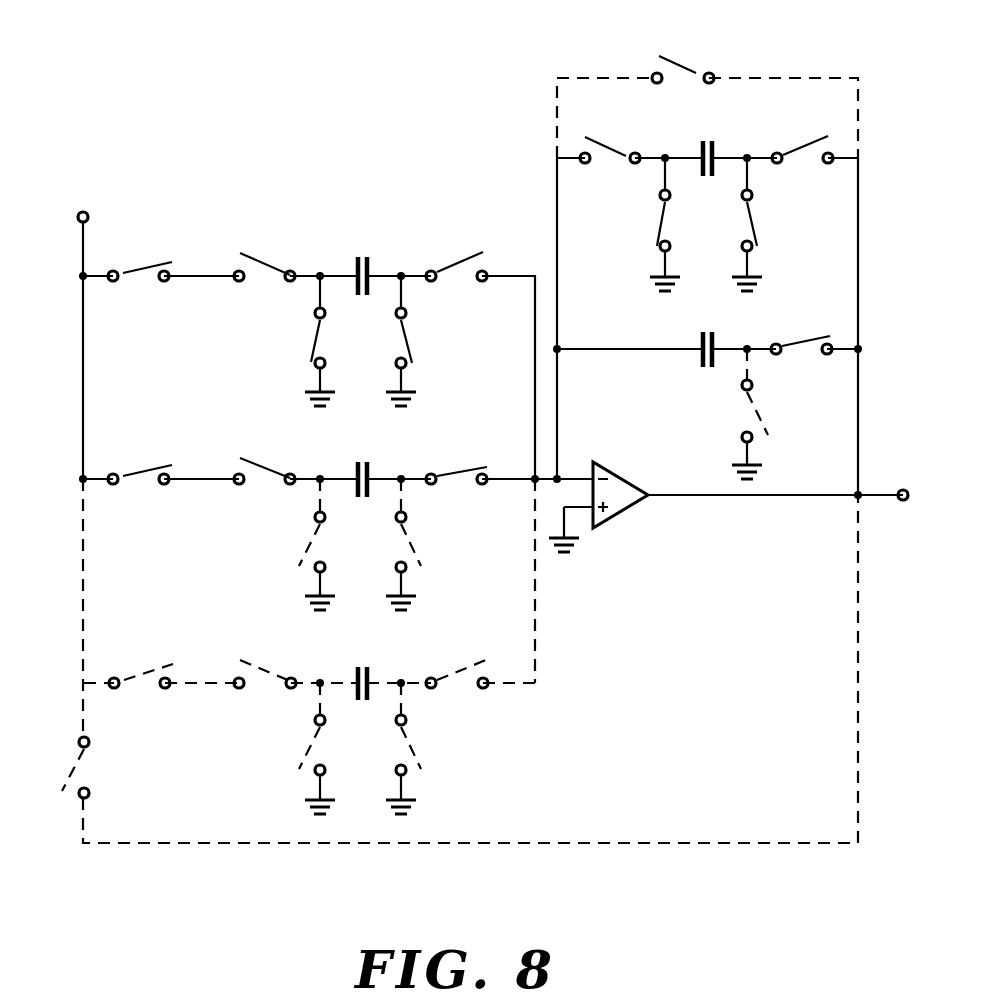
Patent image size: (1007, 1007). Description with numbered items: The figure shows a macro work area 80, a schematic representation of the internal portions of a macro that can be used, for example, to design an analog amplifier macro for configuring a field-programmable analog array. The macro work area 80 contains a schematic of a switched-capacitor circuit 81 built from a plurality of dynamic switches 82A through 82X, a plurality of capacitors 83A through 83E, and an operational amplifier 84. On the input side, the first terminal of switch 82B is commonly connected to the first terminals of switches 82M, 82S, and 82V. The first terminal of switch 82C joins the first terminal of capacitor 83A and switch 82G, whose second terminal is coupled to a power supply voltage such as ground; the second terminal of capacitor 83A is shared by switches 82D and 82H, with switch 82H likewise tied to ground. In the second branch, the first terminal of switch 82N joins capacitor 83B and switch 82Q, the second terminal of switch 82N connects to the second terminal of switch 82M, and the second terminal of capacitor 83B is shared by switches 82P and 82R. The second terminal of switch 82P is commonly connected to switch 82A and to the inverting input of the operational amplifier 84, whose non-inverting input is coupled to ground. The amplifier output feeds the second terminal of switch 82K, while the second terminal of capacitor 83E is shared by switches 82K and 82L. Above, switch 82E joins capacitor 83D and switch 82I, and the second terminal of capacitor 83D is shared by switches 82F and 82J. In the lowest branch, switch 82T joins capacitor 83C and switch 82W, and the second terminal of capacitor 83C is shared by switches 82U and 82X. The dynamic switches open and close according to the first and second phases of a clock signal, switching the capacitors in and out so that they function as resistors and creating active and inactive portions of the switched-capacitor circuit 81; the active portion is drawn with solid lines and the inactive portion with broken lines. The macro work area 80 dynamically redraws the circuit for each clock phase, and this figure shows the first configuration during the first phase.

The macro work area 80 is at (440, 903).
The switched-capacitor circuit 81 is at (382, 167).
The dynamic switch 82A is at (672, 63).
The dynamic switch 82B is at (145, 265).
The dynamic switch 82C is at (253, 258).
The dynamic switch 82D is at (460, 263).
The dynamic switch 82E is at (608, 130).
The dynamic switch 82F is at (805, 145).
The dynamic switch 82G is at (313, 338).
The dynamic switch 82H is at (406, 340).
The dynamic switch 82I is at (661, 220).
The dynamic switch 82J is at (754, 212).
The dynamic switch 82K is at (805, 341).
The dynamic switch 82L is at (761, 418).
The dynamic switch 82M is at (145, 470).
The dynamic switch 82N is at (262, 454).
The dynamic switch 82P is at (460, 471).
The dynamic switch 82Q is at (309, 546).
The dynamic switch 82R is at (408, 544).
The dynamic switch 82S is at (145, 672).
The dynamic switch 82T is at (262, 654).
The dynamic switch 82U is at (460, 671).
The dynamic switch 82V is at (73, 768).
The dynamic switch 82W is at (306, 749).
The dynamic switch 82X is at (409, 751).
The capacitor 83A is at (363, 256).
The capacitor 83B is at (363, 462).
The capacitor 83C is at (363, 666).
The capacitor 83D is at (706, 141).
The capacitor 83E is at (706, 332).
The operational amplifier 84 is at (618, 476).